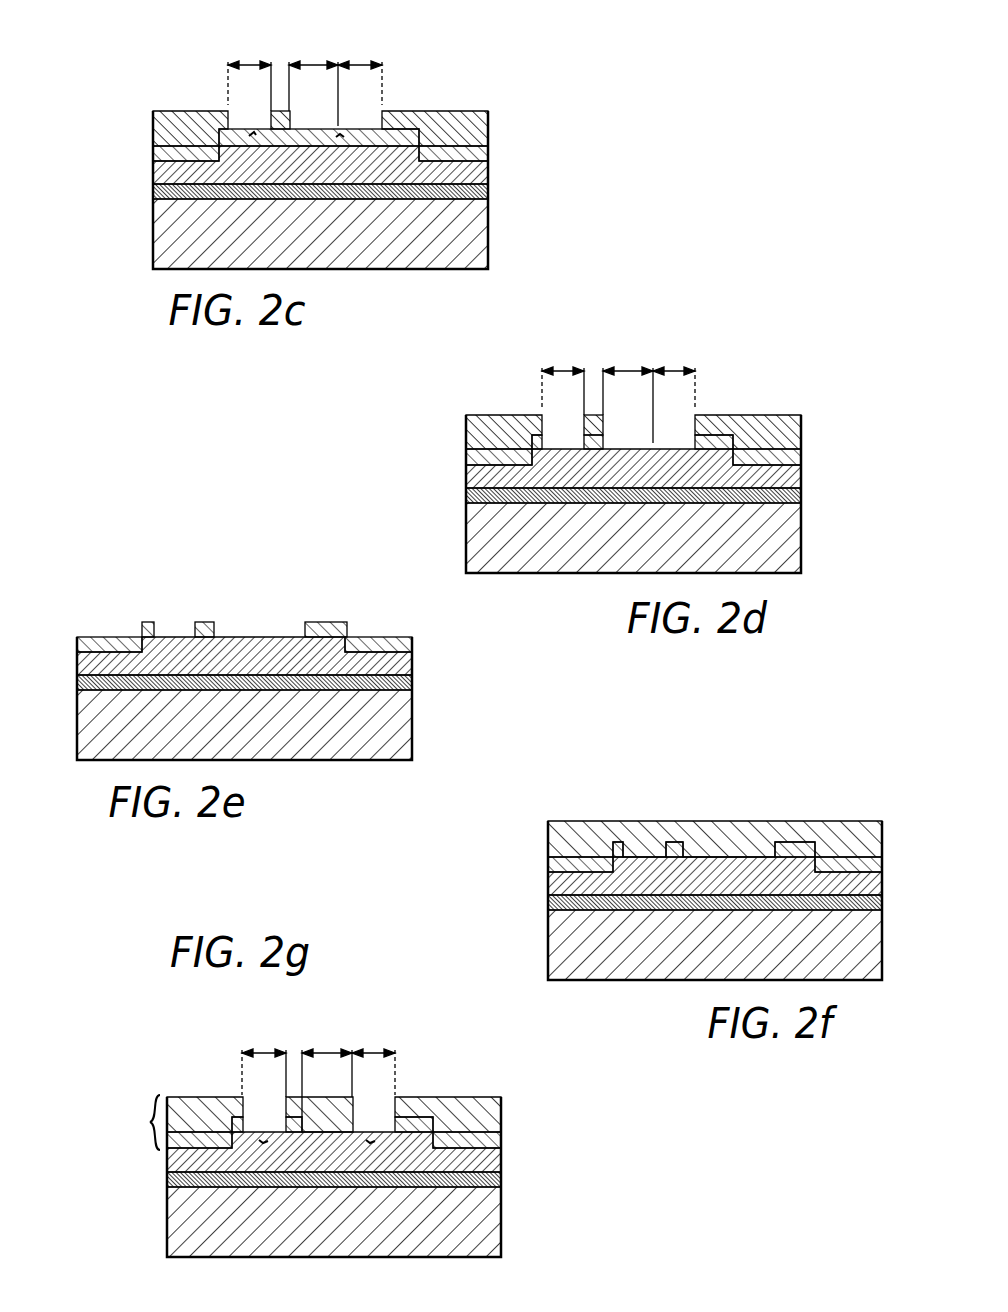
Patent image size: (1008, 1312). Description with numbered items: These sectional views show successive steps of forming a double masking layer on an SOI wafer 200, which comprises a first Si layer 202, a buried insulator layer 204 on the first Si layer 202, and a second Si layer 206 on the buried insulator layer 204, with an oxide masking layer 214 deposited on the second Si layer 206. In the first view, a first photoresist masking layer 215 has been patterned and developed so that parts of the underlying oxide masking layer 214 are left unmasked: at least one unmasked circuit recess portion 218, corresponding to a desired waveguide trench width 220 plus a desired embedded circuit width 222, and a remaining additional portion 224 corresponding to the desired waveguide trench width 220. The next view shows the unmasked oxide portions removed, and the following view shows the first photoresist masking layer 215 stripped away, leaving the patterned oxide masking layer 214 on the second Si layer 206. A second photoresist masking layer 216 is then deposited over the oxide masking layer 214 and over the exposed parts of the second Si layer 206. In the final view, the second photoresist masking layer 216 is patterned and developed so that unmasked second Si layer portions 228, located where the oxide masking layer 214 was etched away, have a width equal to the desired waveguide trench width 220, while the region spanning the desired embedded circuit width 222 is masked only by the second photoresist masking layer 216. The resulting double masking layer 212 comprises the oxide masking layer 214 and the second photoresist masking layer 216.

In FIG. 2c, the SOI wafer 200 is at (495, 53).
In FIG. 2d, the SOI wafer 200 is at (782, 357).
In FIG. 2e, the SOI wafer 200 is at (161, 597).
In FIG. 2f, the SOI wafer 200 is at (786, 800).
In FIG. 2g, the SOI wafer 200 is at (192, 1032).
In FIG. 2c, the first Si layer 202 is at (489, 233).
In FIG. 2d, the first Si layer 202 is at (802, 537).
In FIG. 2e, the first Si layer 202 is at (413, 722).
In FIG. 2f, the first Si layer 202 is at (548, 943).
In FIG. 2g, the first Si layer 202 is at (502, 1218).
In FIG. 2c, the buried insulator layer 204 is at (489, 190).
In FIG. 2d, the buried insulator layer 204 is at (802, 493).
In FIG. 2e, the buried insulator layer 204 is at (413, 682).
In FIG. 2f, the buried insulator layer 204 is at (548, 900).
In FIG. 2g, the buried insulator layer 204 is at (502, 1178).
In FIG. 2c, the second Si layer 206 is at (489, 177).
In FIG. 2d, the second Si layer 206 is at (802, 482).
In FIG. 2e, the second Si layer 206 is at (413, 667).
In FIG. 2f, the second Si layer 206 is at (548, 887).
In FIG. 2g, the second Si layer 206 is at (502, 1163).
In FIG. 2g, the double masking layer 212 is at (148, 1121).
In FIG. 2c, the oxide masking layer 214 is at (153, 152).
In FIG. 2d, the oxide masking layer 214 is at (466, 457).
In FIG. 2e, the oxide masking layer 214 is at (413, 640).
In FIG. 2f, the oxide masking layer 214 is at (548, 863).
In FIG. 2g, the oxide masking layer 214 is at (502, 1137).
In FIG. 2c, the first photoresist masking layer 215 is at (153, 128).
In FIG. 2d, the first photoresist masking layer 215 is at (466, 433).
In FIG. 2f, the second photoresist masking layer 216 is at (548, 837).
In FIG. 2g, the second photoresist masking layer 216 is at (502, 1110).
In FIG. 2c, the unmasked circuit recess portion 218 is at (340, 140).
In FIG. 2c, the desired waveguide trench width 220 is at (246, 62).
In FIG. 2d, the desired waveguide trench width 220 is at (564, 368).
In FIG. 2g, the desired waveguide trench width 220 is at (243, 1049).
In FIG. 2c, the desired embedded circuit width 222 is at (313, 62).
In FIG. 2d, the desired embedded circuit width 222 is at (627, 368).
In FIG. 2g, the desired embedded circuit width 222 is at (304, 1046).
In FIG. 2c, the remaining additional portion 224 is at (252, 134).
In FIG. 2g, the unmasked second Si layer portions 228 is at (262, 1140).